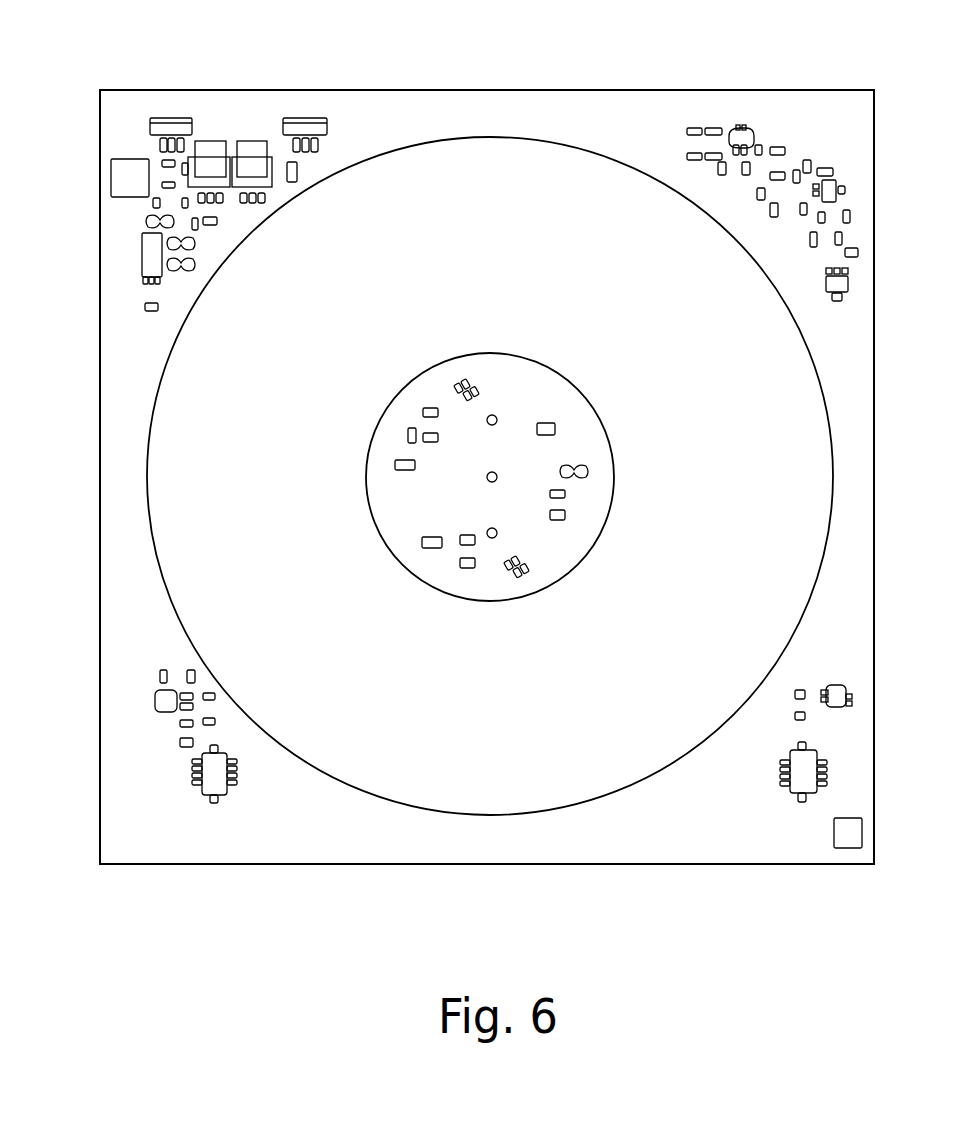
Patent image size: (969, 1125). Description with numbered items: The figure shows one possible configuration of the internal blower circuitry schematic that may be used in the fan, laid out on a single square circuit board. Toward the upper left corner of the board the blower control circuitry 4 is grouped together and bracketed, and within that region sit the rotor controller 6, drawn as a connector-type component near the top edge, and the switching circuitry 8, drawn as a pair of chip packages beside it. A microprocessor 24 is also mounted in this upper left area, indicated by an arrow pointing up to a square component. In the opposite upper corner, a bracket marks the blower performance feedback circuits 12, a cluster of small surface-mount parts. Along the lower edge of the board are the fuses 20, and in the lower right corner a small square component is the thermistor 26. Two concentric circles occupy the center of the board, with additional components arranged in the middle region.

The blower control circuitry 4 is at (311, 88).
The rotor controller 6 is at (130, 121).
The switching circuitry 8 is at (222, 118).
The blower performance feedback circuits 12 is at (852, 88).
The fuses 20 is at (182, 740).
The microprocessor 24 is at (118, 207).
The thermistor 26 is at (850, 865).